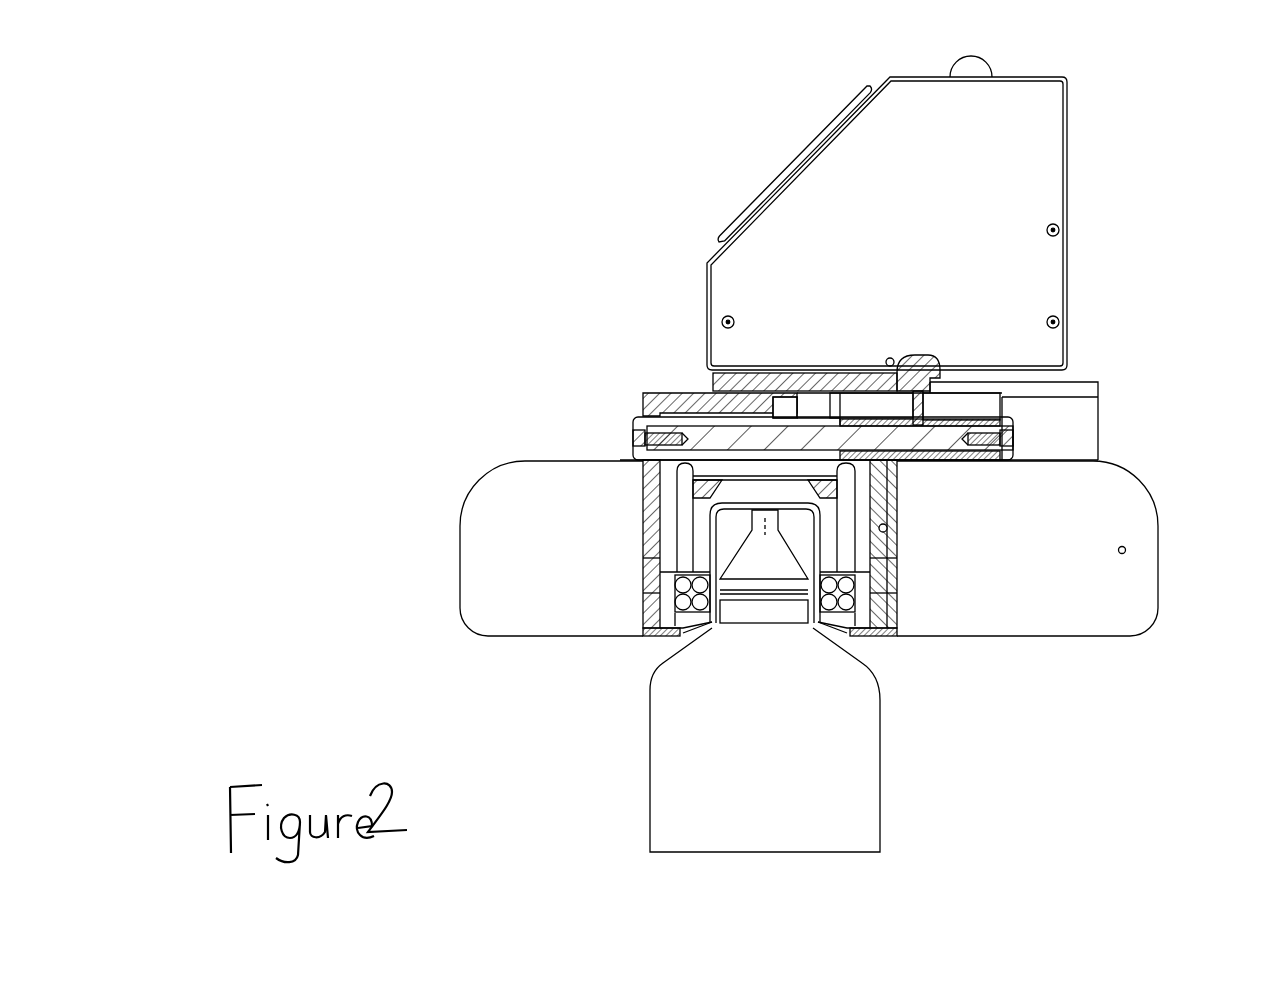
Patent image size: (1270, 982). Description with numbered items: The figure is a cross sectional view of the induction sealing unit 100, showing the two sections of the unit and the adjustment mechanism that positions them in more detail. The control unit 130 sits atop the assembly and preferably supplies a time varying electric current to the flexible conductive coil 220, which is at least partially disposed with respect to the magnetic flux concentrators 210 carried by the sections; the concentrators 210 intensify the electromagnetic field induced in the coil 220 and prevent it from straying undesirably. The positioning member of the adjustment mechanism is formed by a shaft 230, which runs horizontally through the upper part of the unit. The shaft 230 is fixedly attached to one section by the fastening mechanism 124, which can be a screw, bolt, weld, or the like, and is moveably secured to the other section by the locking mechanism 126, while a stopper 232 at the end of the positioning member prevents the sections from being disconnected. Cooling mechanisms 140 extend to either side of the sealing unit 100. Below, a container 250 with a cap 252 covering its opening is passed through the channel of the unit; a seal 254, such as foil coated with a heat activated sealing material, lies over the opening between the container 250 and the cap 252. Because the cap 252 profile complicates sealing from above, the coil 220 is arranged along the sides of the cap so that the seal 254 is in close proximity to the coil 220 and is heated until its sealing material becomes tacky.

The induction sealing unit 100 is at (315, 129).
The control unit 130 is at (852, 223).
The locking mechanism 126 is at (911, 335).
The fastening mechanism 124 is at (811, 402).
The stopper 232 is at (1087, 421).
The shaft 230 is at (800, 352).
The cooling mechanisms 140 is at (825, 512).
The magnetic flux concentrators 210 is at (775, 548).
The flexible conductive coil 220 is at (790, 571).
The cap 252 is at (879, 621).
The seal 254 is at (758, 671).
The container 250 is at (674, 740).